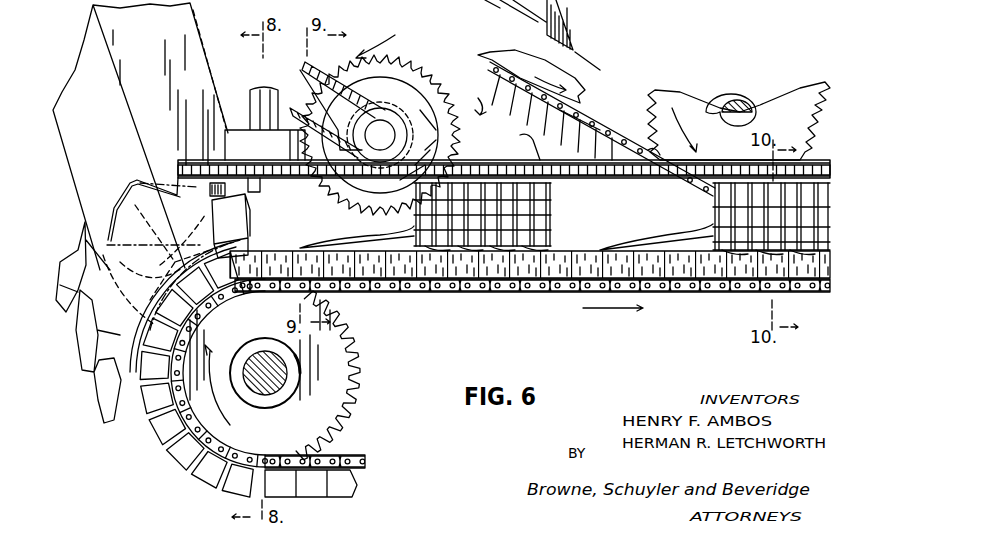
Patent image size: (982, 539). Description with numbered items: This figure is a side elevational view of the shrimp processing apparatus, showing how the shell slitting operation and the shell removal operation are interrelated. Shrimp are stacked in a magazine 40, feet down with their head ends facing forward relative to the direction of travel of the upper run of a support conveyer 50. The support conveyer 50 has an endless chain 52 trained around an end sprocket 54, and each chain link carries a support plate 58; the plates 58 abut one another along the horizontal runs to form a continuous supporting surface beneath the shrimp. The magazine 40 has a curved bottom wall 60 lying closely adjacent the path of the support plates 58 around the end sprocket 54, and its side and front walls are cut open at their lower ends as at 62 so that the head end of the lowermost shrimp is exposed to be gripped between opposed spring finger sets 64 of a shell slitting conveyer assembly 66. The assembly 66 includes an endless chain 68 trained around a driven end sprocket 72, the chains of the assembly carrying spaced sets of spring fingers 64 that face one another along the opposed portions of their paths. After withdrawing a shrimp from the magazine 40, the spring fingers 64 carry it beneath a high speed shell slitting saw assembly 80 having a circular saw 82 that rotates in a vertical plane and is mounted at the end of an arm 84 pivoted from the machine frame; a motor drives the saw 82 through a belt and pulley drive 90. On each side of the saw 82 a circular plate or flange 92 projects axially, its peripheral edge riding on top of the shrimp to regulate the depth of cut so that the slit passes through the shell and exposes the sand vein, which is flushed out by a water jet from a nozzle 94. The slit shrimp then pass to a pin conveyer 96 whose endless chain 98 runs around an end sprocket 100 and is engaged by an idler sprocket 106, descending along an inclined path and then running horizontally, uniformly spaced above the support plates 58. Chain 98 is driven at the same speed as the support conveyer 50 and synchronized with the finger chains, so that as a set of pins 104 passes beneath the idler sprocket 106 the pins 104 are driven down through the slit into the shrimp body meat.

The magazine 40 is at (178, 30).
The support conveyer 50 is at (409, 305).
The endless chain 52 is at (368, 460).
The end sprocket 54 is at (345, 398).
The support plate 58 is at (195, 455).
The bottom wall 60 is at (94, 331).
The cut-open lower ends 62 is at (212, 212).
The spring finger sets 64 is at (248, 216).
The shell slitting conveyer assembly 66 is at (606, 144).
The endless chain 68 is at (478, 165).
The end sprocket 72 is at (244, 136).
The shell slitting saw assembly 80 is at (375, 37).
The circular saw 82 is at (446, 72).
The arm 84 is at (355, 122).
The belt and pulley drive 90 is at (316, 66).
The circular plate or flange 92 is at (407, 102).
The nozzle 94 is at (530, 158).
The pin conveyer 96 is at (596, 112).
The endless chain 98 is at (650, 150).
The end sprocket 100 is at (548, 80).
The pins 104 is at (478, 98).
The idler sprocket 106 is at (700, 114).